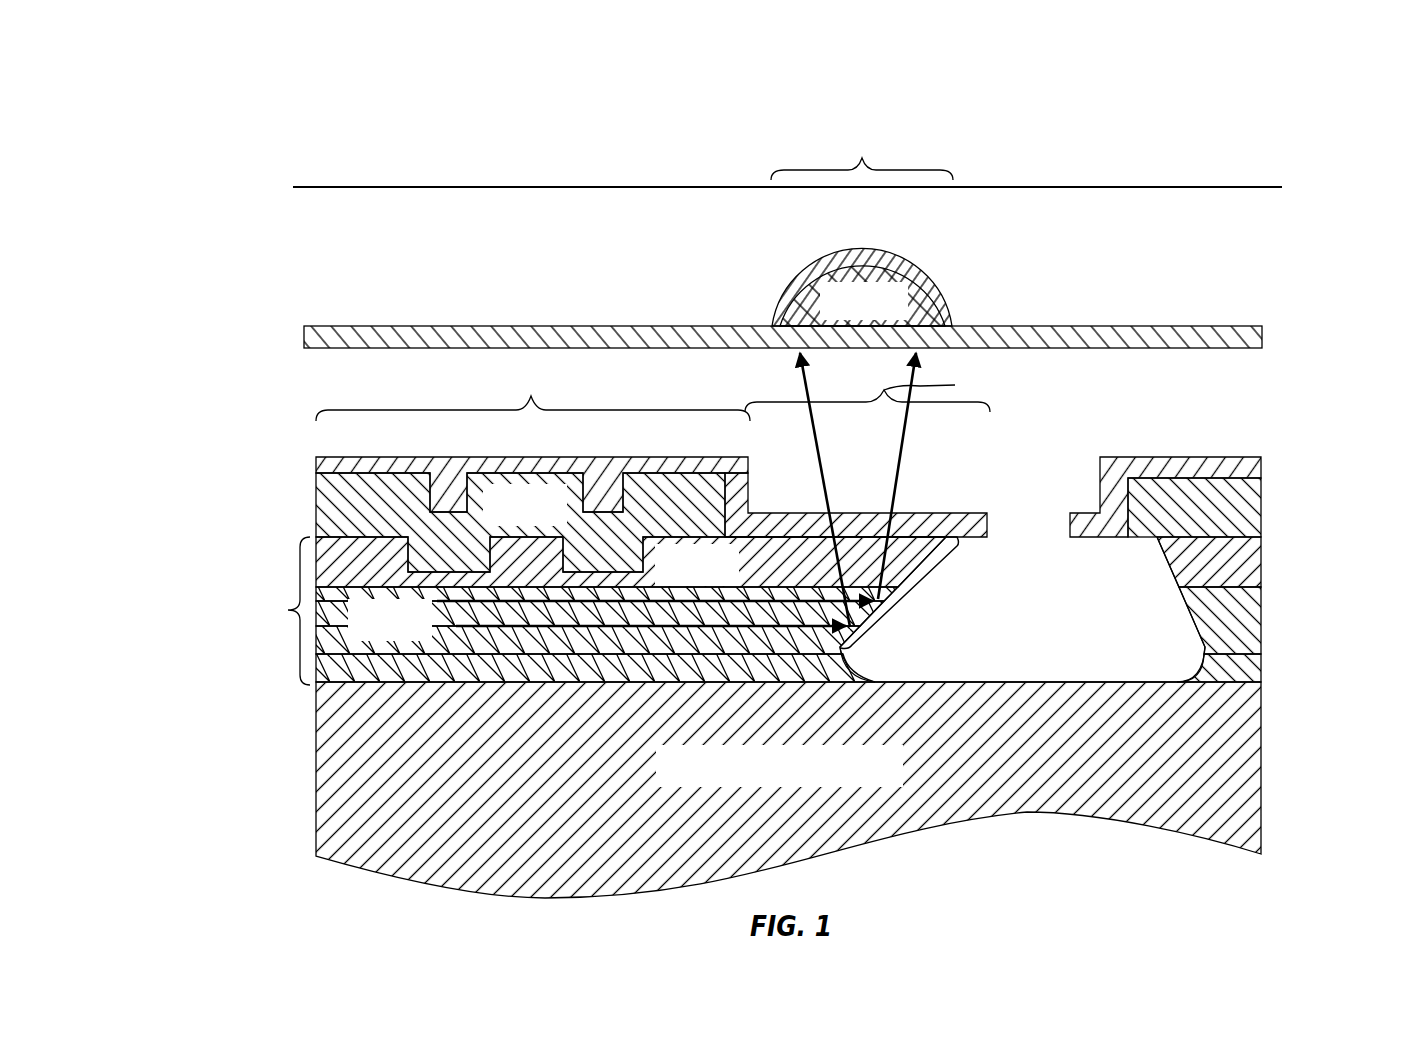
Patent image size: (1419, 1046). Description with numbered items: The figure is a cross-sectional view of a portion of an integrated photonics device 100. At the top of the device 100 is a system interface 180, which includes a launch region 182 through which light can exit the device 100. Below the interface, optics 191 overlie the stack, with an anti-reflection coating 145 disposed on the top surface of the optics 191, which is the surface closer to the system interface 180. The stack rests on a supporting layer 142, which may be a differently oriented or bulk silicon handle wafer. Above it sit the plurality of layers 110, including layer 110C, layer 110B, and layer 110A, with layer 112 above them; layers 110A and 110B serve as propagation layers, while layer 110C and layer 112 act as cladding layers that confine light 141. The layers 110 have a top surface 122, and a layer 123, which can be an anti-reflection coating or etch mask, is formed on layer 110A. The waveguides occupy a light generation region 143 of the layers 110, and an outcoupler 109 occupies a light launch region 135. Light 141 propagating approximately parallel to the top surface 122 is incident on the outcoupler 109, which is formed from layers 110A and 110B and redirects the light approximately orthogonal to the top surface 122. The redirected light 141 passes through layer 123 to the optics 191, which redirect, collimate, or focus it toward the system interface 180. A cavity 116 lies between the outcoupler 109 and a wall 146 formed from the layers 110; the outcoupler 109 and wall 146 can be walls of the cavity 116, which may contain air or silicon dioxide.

The device 100 is at (322, 157).
The system interface 180 is at (1222, 184).
The launch region 182 is at (862, 132).
The anti-reflection coating 145 is at (941, 274).
The optics 191 is at (880, 321).
The light generation region 143 is at (533, 387).
The light launch region 135 is at (992, 382).
The light 141 is at (458, 610).
The top surface 122 is at (783, 525).
The layer 112 is at (540, 525).
The layer 123 is at (997, 511).
The plurality of layers 110 is at (287, 610).
The layer 110A is at (720, 583).
The layer 110B is at (412, 640).
The layer 110C is at (1262, 668).
The outcoupler 109 is at (903, 604).
The cavity 116 is at (1073, 668).
The wall 146 is at (1178, 549).
The supporting layer 142 is at (794, 785).